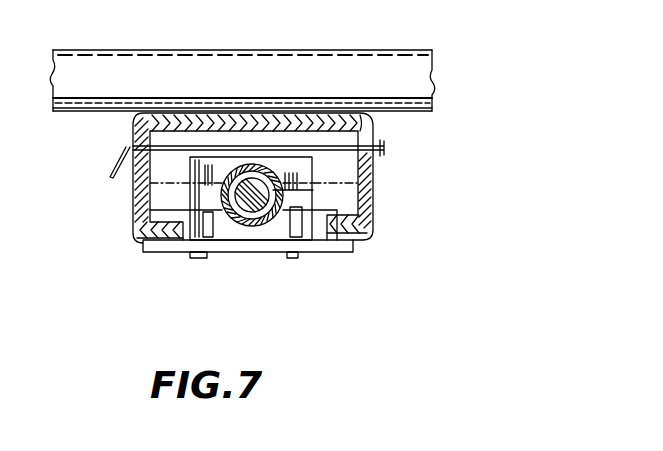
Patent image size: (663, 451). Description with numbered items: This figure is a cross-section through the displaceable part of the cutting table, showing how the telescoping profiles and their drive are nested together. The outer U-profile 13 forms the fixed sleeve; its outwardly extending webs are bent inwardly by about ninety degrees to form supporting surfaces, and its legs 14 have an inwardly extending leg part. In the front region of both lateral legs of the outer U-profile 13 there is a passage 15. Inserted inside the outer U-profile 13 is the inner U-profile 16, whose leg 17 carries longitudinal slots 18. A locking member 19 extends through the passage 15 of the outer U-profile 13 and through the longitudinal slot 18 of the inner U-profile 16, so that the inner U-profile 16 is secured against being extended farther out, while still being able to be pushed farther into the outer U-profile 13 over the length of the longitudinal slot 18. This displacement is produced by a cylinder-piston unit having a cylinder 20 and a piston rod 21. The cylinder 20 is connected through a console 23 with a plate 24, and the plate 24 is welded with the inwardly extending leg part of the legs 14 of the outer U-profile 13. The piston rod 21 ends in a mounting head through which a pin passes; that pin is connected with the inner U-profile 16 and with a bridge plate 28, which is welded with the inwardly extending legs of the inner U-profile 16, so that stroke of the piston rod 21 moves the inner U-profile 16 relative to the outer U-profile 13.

The outer U-profile 13 is at (133, 211).
The legs 14 is at (133, 237).
The passage 15 is at (132, 125).
The inner U-profile 16 is at (372, 205).
The leg 17 is at (130, 184).
The longitudinal slots 18 is at (360, 117).
The locking member 19 is at (385, 147).
The cylinder 20 is at (257, 252).
The piston rod 21 is at (225, 240).
The console 23 is at (188, 242).
The plate 24 is at (262, 224).
The bridge plate 28 is at (323, 178).